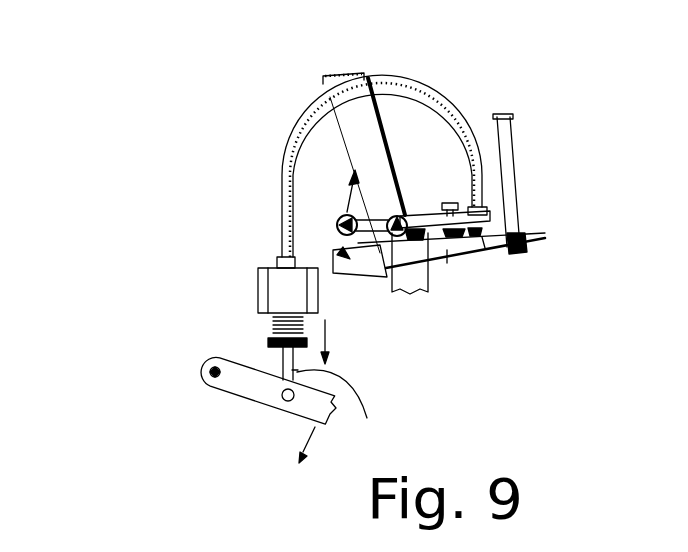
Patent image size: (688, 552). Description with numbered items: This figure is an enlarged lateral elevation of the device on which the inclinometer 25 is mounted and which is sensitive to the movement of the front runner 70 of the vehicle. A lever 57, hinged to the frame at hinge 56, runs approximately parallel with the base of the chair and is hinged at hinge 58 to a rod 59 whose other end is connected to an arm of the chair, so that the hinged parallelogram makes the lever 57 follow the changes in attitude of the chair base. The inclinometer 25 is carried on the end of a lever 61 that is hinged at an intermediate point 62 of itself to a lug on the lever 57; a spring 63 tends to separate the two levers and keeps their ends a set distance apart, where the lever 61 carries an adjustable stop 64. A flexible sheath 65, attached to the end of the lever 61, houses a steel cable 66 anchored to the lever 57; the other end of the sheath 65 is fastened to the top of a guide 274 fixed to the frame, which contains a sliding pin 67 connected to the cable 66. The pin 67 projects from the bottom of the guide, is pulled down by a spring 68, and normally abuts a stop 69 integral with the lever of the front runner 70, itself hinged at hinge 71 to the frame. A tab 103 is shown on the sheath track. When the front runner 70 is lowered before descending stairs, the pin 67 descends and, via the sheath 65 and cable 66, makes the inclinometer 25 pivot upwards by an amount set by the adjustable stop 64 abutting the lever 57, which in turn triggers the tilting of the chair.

The tab on arcuate track 103 is at (338, 78).
The flexible sheath 65 is at (438, 95).
The rod 59 is at (502, 132).
The inclinometer 25 is at (340, 220).
The hinge 56 is at (346, 255).
The adjustable stop 64 is at (447, 203).
The lever 61 is at (488, 217).
The guide 274 is at (283, 287).
The hinge 58 is at (525, 240).
The spring 68 is at (273, 328).
The steel cable 66 is at (497, 255).
The intermediate point 62 is at (393, 298).
The lever 57 is at (447, 252).
The hinge 71 is at (210, 372).
The spring 63 is at (426, 234).
The front runner 70 is at (240, 397).
The stop 69 is at (288, 401).
The sliding pin 67 is at (344, 415).